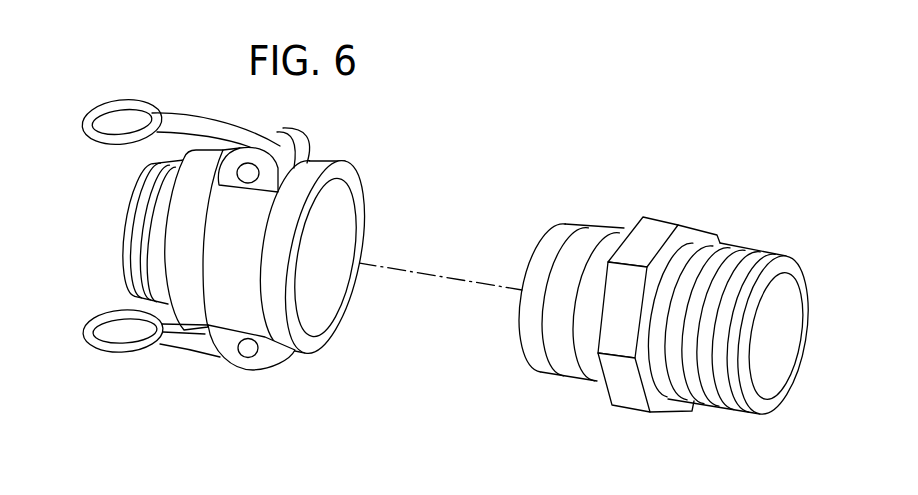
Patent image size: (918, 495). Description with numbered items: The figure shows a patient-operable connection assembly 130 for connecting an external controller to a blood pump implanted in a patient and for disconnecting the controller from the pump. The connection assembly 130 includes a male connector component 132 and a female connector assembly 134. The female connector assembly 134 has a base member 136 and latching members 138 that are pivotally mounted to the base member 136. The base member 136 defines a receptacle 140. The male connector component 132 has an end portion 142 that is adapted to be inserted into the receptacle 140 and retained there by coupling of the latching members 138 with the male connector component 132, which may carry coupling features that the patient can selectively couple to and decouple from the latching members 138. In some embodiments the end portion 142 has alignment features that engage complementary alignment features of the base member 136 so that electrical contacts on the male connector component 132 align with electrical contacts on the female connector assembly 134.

The patient-operable connection assembly 130 is at (537, 148).
The male connector component 132 is at (682, 277).
The female connector assembly 134 is at (294, 371).
The base member 136 is at (175, 227).
The latching members 138 is at (192, 117).
The receptacle 140 is at (326, 302).
The end portion 142 is at (630, 218).